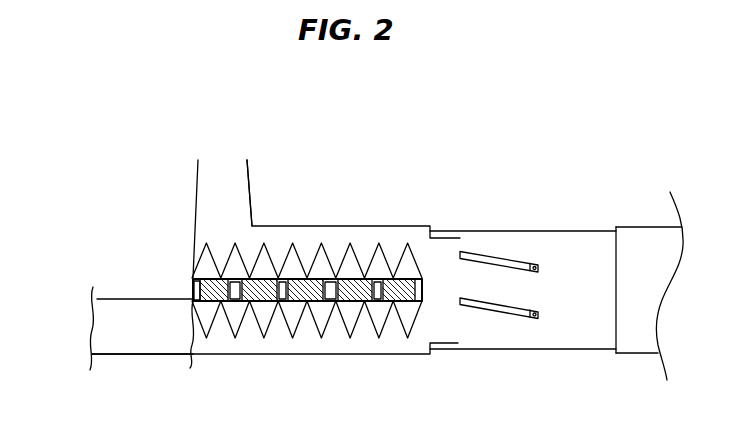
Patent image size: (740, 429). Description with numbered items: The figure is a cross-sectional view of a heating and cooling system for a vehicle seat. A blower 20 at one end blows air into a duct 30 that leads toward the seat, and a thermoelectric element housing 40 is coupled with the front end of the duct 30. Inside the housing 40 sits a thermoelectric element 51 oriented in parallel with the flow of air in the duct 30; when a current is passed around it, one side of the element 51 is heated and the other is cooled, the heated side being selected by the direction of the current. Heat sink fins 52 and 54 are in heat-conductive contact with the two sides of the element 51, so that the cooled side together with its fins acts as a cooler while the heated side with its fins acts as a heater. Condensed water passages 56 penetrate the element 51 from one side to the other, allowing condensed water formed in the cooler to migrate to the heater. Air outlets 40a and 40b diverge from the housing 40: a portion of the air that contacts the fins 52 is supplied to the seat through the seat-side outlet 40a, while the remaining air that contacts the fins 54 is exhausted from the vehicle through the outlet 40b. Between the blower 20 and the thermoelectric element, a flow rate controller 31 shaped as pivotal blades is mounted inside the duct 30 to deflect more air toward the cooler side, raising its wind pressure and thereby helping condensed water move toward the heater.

The blower 20 is at (642, 227).
The duct 30 is at (485, 230).
The flow rate controller 31 is at (513, 272).
The thermoelectric element housing 40 is at (325, 227).
The seat-side outlet 40a is at (223, 172).
The air outlet 40b is at (107, 325).
The thermoelectric element 51 is at (266, 303).
The heat sink fins 52 is at (197, 279).
The heat sink fins 54 is at (195, 318).
The condensed water passages 56 is at (236, 302).